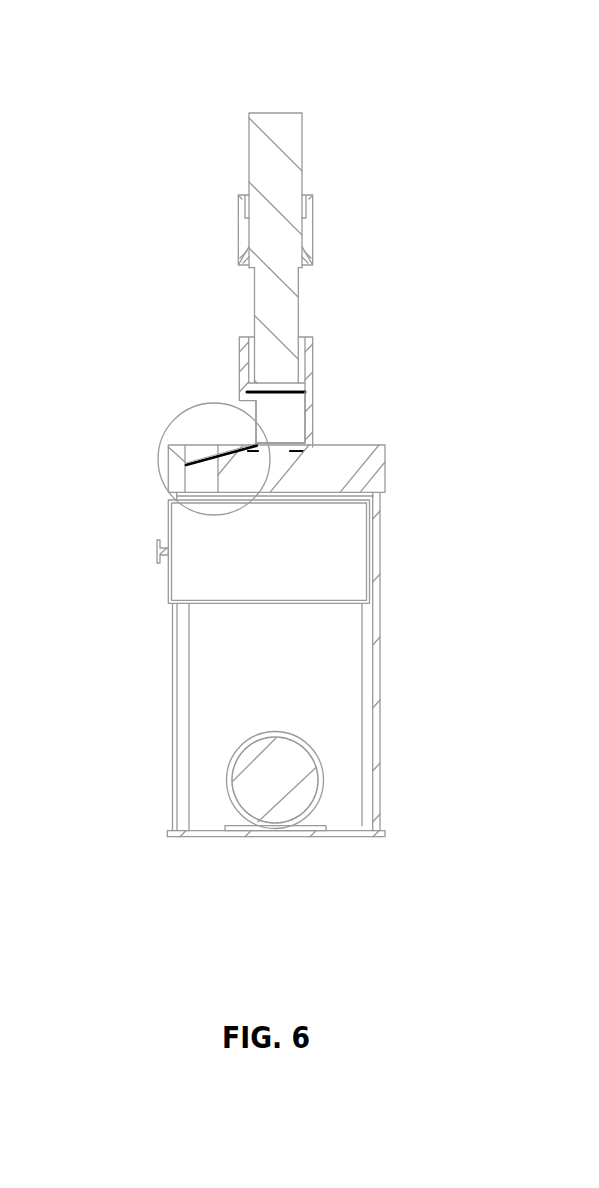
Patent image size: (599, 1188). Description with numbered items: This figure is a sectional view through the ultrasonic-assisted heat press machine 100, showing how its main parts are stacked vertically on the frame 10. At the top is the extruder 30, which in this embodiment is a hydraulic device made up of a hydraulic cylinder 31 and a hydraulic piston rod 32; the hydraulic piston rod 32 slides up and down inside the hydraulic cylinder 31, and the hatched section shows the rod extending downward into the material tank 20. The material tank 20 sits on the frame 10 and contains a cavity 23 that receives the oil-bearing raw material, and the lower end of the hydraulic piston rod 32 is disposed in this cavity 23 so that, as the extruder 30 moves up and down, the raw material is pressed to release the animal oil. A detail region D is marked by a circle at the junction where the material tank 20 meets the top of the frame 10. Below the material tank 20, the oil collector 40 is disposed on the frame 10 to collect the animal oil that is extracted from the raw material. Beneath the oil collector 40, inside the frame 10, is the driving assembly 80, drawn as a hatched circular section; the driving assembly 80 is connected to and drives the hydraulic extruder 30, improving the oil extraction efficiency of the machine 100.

The ultrasonic-assisted heat press machine 100 is at (282, 104).
The extruder 30 is at (423, 250).
The hydraulic cylinder 31 is at (268, 239).
The hydraulic piston rod 32 is at (275, 303).
The material tank 20 is at (240, 354).
The cavity 23 is at (285, 415).
The frame 10 is at (367, 668).
The detail region D is at (160, 457).
The oil collector 40 is at (313, 553).
The driving assembly 80 is at (297, 802).